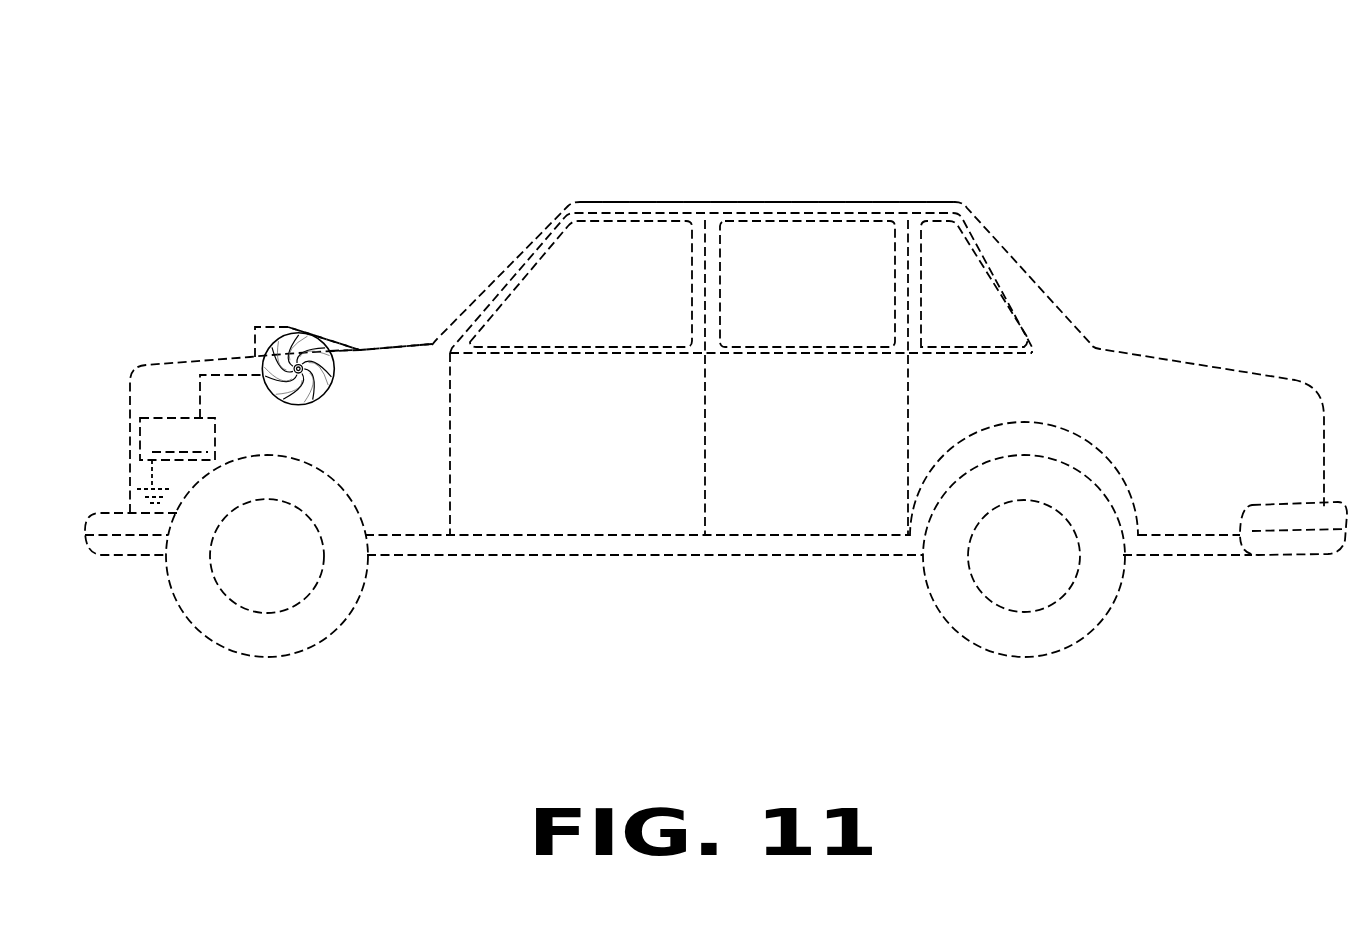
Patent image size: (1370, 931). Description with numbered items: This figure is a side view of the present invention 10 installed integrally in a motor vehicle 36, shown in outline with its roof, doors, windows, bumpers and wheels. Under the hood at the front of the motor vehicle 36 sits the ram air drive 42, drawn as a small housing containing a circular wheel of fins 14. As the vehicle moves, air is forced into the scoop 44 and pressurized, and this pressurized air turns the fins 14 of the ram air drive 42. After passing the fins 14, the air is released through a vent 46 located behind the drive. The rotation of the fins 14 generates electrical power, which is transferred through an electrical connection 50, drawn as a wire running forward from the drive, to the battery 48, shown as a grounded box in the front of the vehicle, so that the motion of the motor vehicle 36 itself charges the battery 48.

The present invention 10 is at (372, 142).
The fins 14 is at (283, 385).
The motor vehicle 36 is at (742, 202).
The ram air drive 42 is at (255, 340).
The scoop 44 is at (334, 337).
The vent 46 is at (337, 357).
The battery 48 is at (176, 460).
The electrical connection 50 is at (198, 376).